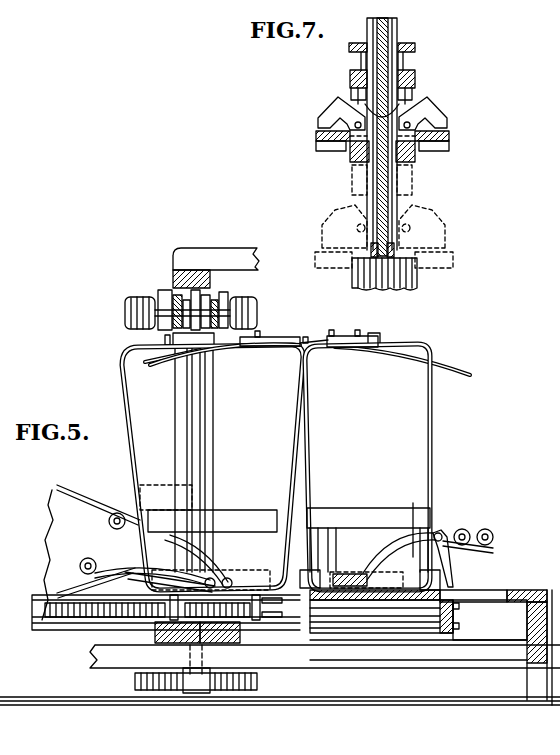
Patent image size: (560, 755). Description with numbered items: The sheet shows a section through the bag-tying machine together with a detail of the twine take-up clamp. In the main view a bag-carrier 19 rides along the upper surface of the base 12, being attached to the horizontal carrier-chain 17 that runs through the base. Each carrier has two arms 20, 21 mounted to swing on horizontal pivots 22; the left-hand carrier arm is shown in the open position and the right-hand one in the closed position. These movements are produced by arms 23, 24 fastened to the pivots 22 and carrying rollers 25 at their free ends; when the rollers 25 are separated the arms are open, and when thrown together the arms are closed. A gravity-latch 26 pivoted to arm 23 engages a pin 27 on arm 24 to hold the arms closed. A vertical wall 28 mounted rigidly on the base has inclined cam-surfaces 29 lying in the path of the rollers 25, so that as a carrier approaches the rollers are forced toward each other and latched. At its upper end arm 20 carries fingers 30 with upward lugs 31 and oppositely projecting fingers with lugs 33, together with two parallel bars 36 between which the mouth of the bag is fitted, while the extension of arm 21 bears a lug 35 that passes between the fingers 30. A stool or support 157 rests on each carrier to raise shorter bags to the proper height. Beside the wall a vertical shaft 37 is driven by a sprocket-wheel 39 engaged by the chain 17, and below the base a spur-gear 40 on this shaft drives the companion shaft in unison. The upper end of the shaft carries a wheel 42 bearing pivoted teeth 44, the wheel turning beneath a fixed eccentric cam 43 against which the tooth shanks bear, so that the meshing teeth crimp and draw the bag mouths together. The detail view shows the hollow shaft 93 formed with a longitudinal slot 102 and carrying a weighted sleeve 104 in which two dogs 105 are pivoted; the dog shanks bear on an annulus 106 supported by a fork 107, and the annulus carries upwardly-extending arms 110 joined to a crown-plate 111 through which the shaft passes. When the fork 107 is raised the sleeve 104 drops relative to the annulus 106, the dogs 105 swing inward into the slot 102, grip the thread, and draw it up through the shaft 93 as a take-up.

In FIG. 7, the shaft 93 is at (392, 40).
In FIG. 7, the crown-plate 111 is at (417, 47).
In FIG. 7, the upwardly-extending arms 110 is at (403, 62).
In FIG. 7, the weighted sleeve 104 is at (417, 80).
In FIG. 7, the dogs 105 is at (336, 109).
In FIG. 7, the ring or annulus 106 is at (449, 133).
In FIG. 7, the fork 107 is at (449, 146).
In FIG. 7, the longitudinal slot 102 is at (392, 178).
In FIG. 5, the cams 43 is at (214, 297).
In FIG. 5, the teeth 44 is at (152, 301).
In FIG. 5, the wheel 42 is at (243, 319).
In FIG. 5, the shaft 37 is at (203, 426).
In FIG. 5, the lug 35 is at (163, 339).
In FIG. 5, the parallel bars 36 is at (166, 357).
In FIG. 5, the arm 21 is at (131, 482).
In FIG. 5, the arm 20 is at (293, 484).
In FIG. 5, the fingers 30 is at (243, 338).
In FIG. 5, the lug 31 is at (262, 336).
In FIG. 5, the lugs 33 is at (306, 340).
In FIG. 5, the horizontal pivots 22 is at (306, 342).
In FIG. 5, the vertical wall 28 is at (166, 497).
In FIG. 5, the stools or supports 157 is at (289, 540).
In FIG. 5, the bag-carriers 19 is at (250, 575).
In FIG. 5, the arm 23 is at (211, 570).
In FIG. 5, the arm 24 is at (261, 541).
In FIG. 5, the pin 27 is at (443, 531).
In FIG. 5, the rollers 25 is at (486, 528).
In FIG. 5, the gravity-latch 26 is at (457, 553).
In FIG. 5, the inclined cam-surfaces 29 is at (100, 497).
In FIG. 5, the carrier-chain 17 is at (53, 622).
In FIG. 5, the sprocket-wheel 39 is at (152, 622).
In FIG. 5, the spur-gear 40 is at (258, 681).
In FIG. 5, the base 12 is at (431, 647).